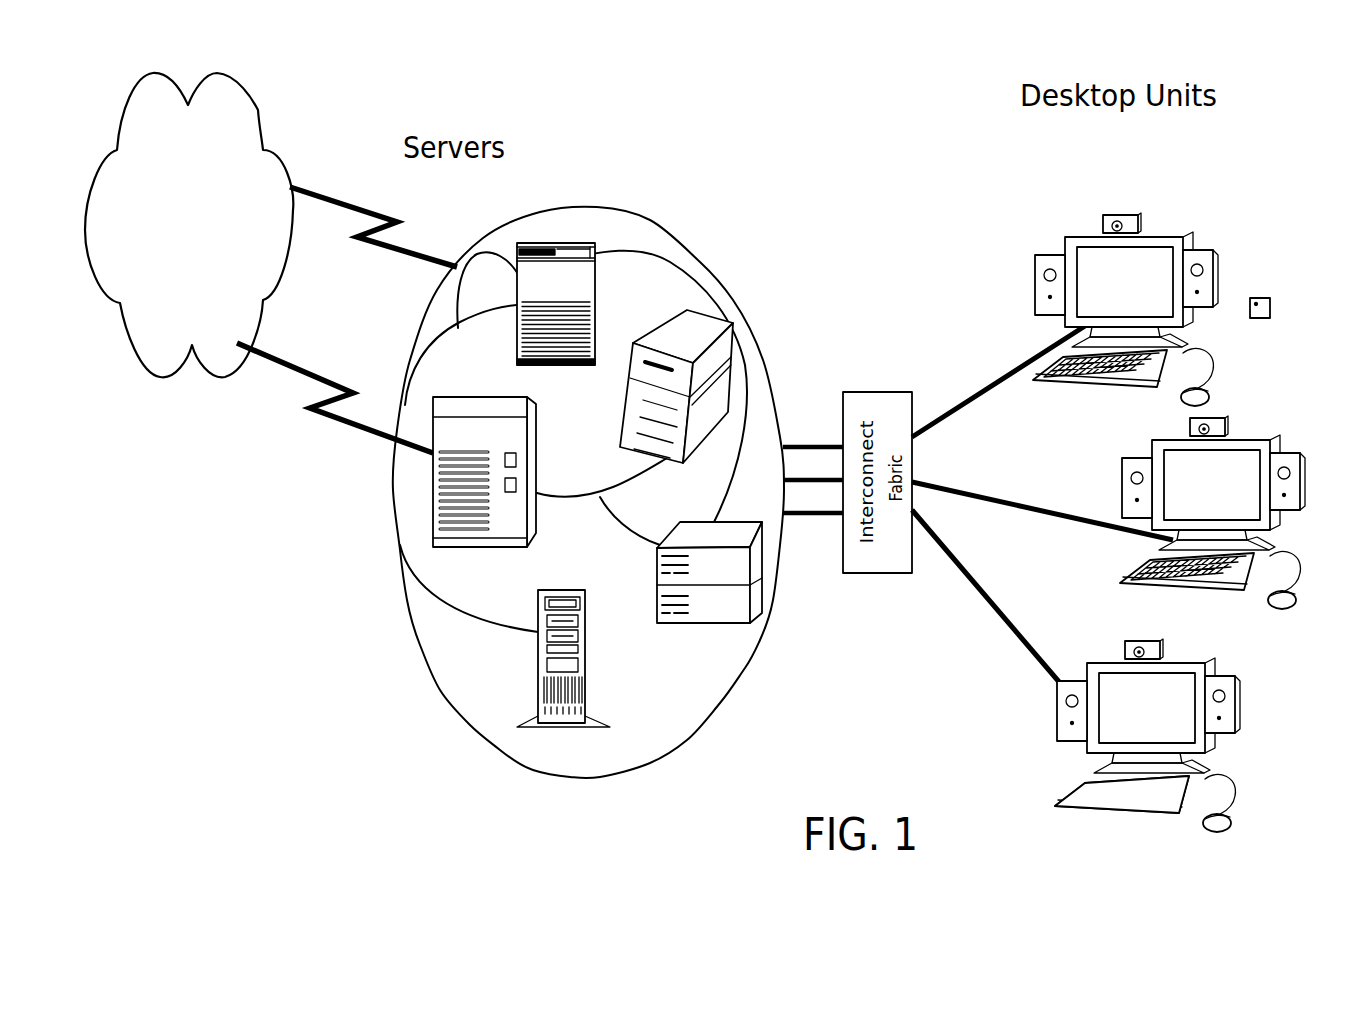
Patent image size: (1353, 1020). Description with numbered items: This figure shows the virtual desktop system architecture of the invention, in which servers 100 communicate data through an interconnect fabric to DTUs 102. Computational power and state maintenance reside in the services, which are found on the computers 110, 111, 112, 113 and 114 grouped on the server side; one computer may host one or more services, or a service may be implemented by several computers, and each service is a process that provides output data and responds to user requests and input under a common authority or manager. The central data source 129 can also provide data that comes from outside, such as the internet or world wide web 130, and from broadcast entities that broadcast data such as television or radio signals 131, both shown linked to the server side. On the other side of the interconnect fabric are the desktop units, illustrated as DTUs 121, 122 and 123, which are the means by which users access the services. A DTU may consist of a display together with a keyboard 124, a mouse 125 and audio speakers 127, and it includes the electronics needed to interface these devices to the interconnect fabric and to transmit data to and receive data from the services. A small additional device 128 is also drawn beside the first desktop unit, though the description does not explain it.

The servers 100 is at (583, 792).
The DTUs 102 is at (1090, 834).
The computer 110 is at (600, 256).
The computer 111 is at (723, 384).
The computer 112 is at (733, 607).
The computer 113 is at (557, 673).
The computer 114 is at (445, 432).
The DTU 121 is at (1151, 304).
The DTU 122 is at (1258, 440).
The DTU 123 is at (1218, 658).
The keyboard 124 is at (1087, 391).
The mouse 125 is at (1180, 398).
The audio speakers 127 is at (1220, 262).
The peripheral device 128 is at (1262, 298).
The central data source 129 is at (256, 112).
The internet or world wide web 130 is at (335, 406).
The television or radio signals 131 is at (374, 227).